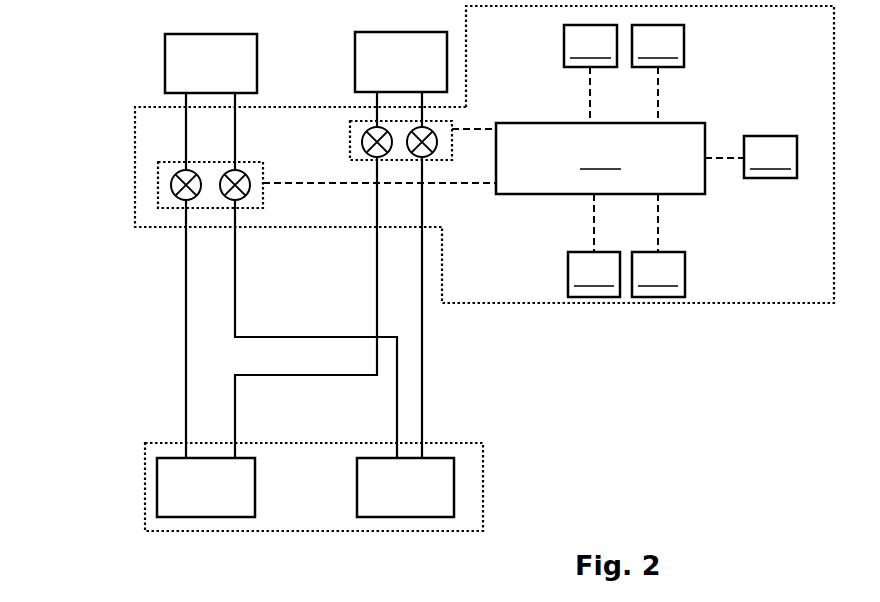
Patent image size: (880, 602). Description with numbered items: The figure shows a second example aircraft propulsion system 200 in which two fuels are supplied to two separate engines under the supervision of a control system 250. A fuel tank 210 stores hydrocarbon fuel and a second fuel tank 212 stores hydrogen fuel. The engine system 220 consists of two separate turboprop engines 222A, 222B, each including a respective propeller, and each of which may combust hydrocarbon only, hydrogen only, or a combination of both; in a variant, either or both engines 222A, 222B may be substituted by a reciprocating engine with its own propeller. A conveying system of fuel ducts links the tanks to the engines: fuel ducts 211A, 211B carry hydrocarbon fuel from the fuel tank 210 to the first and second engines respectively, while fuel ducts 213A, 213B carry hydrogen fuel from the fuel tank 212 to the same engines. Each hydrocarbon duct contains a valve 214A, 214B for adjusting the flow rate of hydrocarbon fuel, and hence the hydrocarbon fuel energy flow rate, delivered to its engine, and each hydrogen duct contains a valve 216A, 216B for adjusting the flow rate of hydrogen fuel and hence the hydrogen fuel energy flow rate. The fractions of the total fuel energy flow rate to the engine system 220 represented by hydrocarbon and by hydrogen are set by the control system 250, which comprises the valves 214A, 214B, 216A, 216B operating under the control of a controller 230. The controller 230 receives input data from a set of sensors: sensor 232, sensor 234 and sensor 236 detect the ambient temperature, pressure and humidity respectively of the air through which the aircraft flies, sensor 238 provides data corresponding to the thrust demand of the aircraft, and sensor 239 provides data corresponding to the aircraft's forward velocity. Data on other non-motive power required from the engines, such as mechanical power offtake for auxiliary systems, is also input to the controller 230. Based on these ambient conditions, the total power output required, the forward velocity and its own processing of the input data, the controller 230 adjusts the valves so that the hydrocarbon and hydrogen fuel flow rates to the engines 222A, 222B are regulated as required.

The aircraft propulsion system 200 is at (753, 376).
The fuel tank 210 is at (175, 60).
The fuel duct 211A is at (186, 265).
The fuel duct 211B is at (233, 313).
The fuel tank 212 is at (369, 51).
The fuel duct 213A is at (377, 292).
The fuel duct 213B is at (422, 368).
The valve 214A is at (173, 184).
The valve 214B is at (232, 200).
The valve 216A is at (370, 141).
The valve 216B is at (432, 150).
The engine system 220 is at (145, 452).
The turboprop engine 222A is at (172, 503).
The turboprop engine 222B is at (387, 503).
The controller 230 is at (484, 158).
The sensor 232 is at (590, 74).
The sensor 234 is at (658, 74).
The sensor 236 is at (594, 245).
The sensor 238 is at (658, 245).
The sensor 239 is at (751, 157).
The control system 250 is at (813, 50).